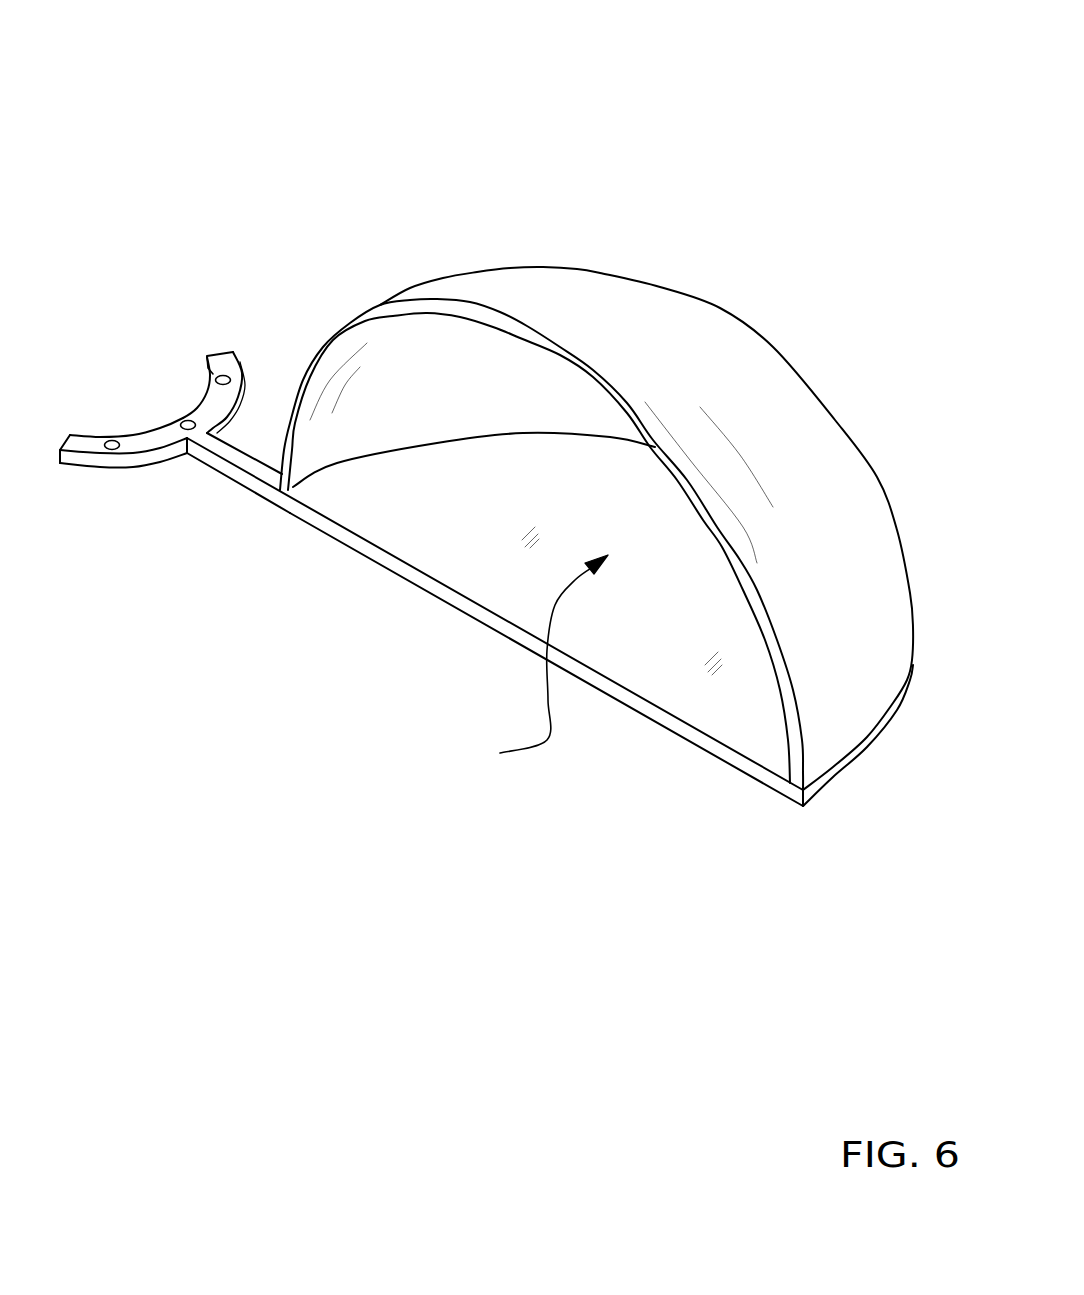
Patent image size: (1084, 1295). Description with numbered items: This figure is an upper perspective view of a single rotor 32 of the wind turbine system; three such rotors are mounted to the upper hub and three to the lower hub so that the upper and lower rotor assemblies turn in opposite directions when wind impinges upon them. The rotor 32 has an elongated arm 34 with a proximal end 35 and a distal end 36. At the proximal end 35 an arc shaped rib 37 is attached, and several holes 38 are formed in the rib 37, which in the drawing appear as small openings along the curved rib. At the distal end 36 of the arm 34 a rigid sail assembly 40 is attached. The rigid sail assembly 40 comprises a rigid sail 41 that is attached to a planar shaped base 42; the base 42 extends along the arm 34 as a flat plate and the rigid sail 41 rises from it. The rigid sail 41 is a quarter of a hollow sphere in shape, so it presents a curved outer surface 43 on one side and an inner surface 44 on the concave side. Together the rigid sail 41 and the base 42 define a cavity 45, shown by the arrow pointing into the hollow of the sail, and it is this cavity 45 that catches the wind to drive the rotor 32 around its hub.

The rotor 32 is at (293, 183).
The arm 34 is at (243, 432).
The proximal end 35 is at (190, 455).
The distal end 36 is at (257, 494).
The arc shaped rib 37 is at (203, 410).
The holes 38 is at (110, 443).
The rigid sail assembly 40 is at (773, 347).
The rigid sail 41 is at (587, 270).
The base 42 is at (633, 708).
The outer surface 43 is at (840, 572).
The inner surface 44 is at (323, 433).
The cavity 45 is at (527, 665).